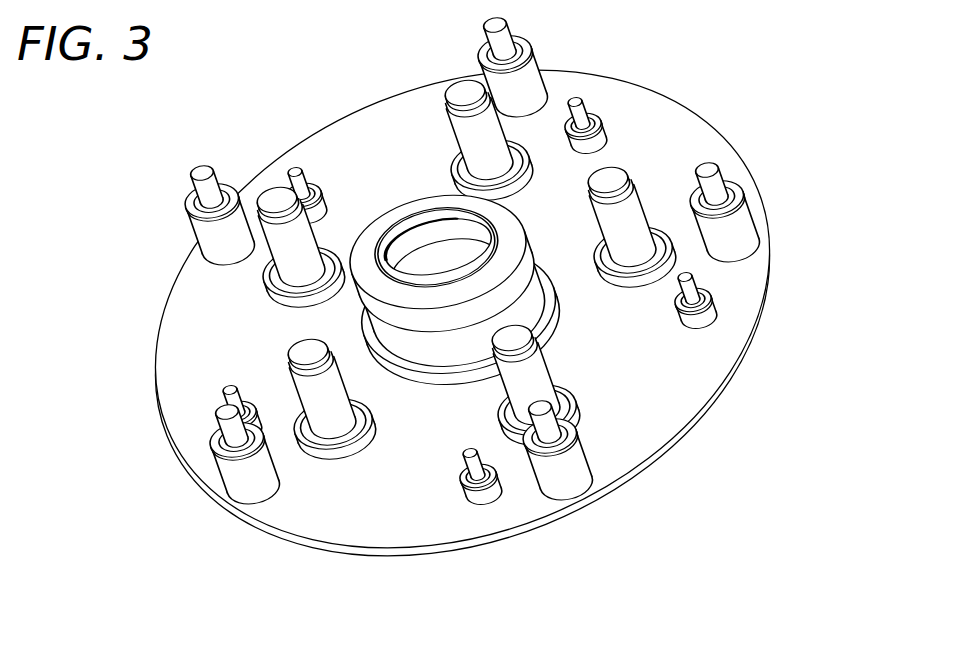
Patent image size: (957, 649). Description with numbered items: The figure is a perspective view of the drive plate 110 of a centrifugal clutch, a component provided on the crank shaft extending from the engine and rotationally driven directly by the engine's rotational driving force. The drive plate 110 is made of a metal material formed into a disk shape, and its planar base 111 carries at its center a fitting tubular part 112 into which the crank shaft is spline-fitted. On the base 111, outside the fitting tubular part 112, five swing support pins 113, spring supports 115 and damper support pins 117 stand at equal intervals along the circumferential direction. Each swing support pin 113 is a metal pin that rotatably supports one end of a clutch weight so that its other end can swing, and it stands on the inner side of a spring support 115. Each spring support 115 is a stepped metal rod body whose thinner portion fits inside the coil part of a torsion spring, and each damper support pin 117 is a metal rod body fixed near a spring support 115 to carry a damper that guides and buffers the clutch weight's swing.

The drive plate 110 is at (458, 321).
The base 111 is at (202, 338).
The fitting tubular part 112 is at (527, 310).
The swing support pin 113 is at (327, 408).
The spring support 115 is at (250, 480).
The damper support pin 117 is at (463, 483).